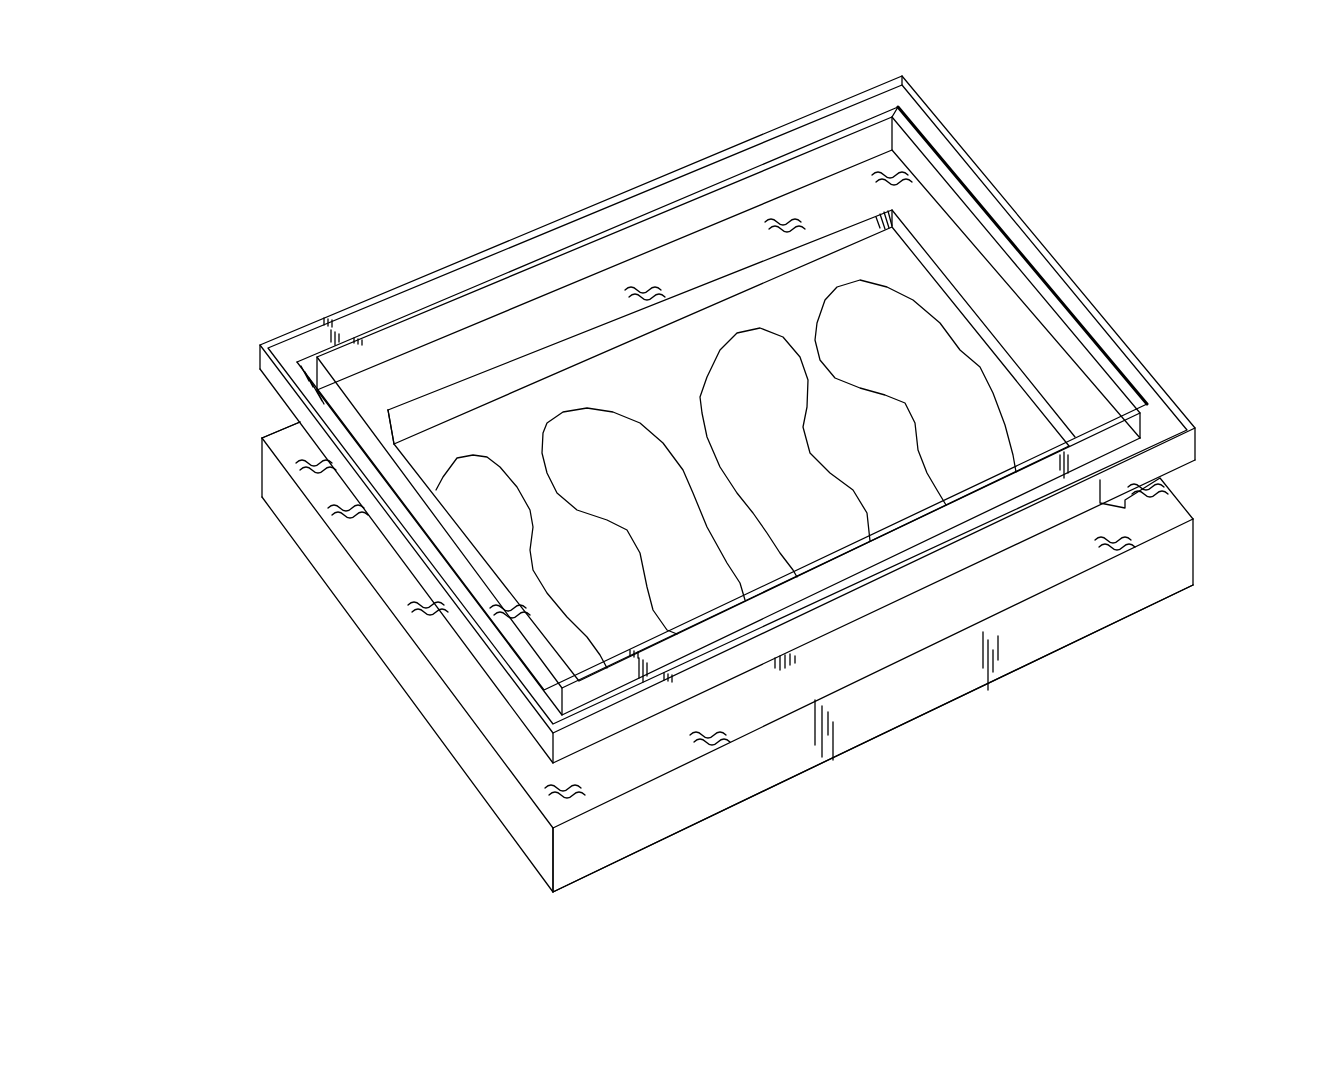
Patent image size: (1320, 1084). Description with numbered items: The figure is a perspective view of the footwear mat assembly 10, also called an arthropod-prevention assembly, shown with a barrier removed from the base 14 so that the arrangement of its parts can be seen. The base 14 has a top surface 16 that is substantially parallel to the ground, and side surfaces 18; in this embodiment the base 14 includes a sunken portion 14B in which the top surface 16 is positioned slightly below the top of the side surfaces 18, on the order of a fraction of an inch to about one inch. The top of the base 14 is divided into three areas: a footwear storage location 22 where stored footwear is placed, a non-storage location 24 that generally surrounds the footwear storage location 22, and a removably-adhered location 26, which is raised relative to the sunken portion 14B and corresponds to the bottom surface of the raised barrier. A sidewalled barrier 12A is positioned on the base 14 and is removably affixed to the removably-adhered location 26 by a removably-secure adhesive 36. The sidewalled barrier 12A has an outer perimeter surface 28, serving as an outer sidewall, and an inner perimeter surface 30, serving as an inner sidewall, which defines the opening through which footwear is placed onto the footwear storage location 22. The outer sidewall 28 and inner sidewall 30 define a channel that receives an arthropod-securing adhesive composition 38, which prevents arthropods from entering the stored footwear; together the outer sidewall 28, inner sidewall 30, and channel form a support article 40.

The footwear mat assembly 10 is at (283, 137).
The sidewalled barrier 12A is at (963, 142).
The base 14 is at (917, 747).
The sunken portion 14B is at (858, 254).
The top surface 16 is at (430, 463).
The side surfaces 18 is at (1048, 640).
The footwear storage location 22 is at (495, 462).
The non-storage location 24 is at (1016, 395).
The removably-adhered location 26 is at (1186, 505).
The outer perimeter surface 28 is at (1043, 497).
The inner perimeter surface 30 is at (400, 344).
The removably-secure adhesive 36 is at (290, 443).
The arthropod-securing adhesive composition 38 is at (460, 574).
The support article 40 is at (248, 340).